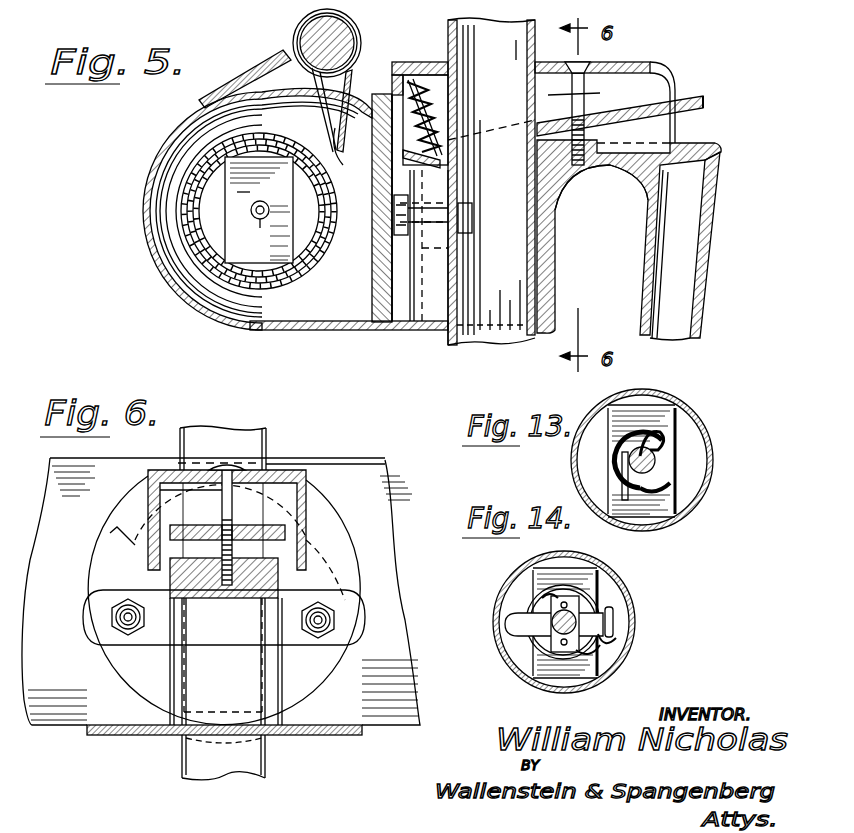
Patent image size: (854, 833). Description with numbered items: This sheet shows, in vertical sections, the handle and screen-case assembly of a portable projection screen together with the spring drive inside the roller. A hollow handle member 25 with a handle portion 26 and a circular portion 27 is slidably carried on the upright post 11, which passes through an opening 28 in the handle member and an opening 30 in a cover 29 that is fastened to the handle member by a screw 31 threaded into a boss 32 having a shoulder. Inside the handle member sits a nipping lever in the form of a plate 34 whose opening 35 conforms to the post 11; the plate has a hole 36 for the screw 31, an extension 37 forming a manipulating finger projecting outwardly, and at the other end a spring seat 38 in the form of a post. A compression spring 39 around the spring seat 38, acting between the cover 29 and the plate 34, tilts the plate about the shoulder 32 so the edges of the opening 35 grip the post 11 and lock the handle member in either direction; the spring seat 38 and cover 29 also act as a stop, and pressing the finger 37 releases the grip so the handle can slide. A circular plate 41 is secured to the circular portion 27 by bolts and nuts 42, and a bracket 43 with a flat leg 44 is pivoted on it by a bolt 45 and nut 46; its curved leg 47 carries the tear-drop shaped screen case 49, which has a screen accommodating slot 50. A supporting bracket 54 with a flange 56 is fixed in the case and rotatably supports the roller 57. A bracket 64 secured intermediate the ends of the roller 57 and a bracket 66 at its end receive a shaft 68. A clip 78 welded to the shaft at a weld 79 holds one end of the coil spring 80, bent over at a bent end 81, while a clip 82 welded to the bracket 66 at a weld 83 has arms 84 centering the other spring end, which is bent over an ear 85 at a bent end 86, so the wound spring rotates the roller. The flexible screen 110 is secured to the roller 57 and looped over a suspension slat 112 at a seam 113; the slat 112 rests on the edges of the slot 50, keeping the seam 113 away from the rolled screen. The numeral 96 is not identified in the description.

In FIG. 5, the upright tube or post 11 is at (535, 24).
In FIG. 6, the upright tube or post 11 is at (268, 442).
In FIG. 5, the hollow handle member 25 is at (560, 210).
In FIG. 5, the handle portion 26 is at (690, 226).
In FIG. 5, the circular portion 27 is at (422, 330).
In FIG. 6, the circular portion 27 is at (122, 563).
In FIG. 5, the opening 28 is at (458, 324).
In FIG. 6, the opening 28 is at (262, 712).
In FIG. 5, the cover 29 is at (648, 62).
In FIG. 6, the cover 29 is at (282, 500).
In FIG. 5, the opening 30 is at (440, 68).
In FIG. 5, the screw 31 is at (580, 93).
In FIG. 6, the screw 31 is at (223, 489).
In FIG. 5, the boss having a shoulder 32 is at (600, 140).
In FIG. 6, the boss having a shoulder 32 is at (310, 550).
In FIG. 5, the nipping lever plate 34 is at (645, 106).
In FIG. 6, the nipping lever plate 34 is at (278, 530).
In FIG. 5, the opening 35 is at (550, 138).
In FIG. 5, the hole 36 is at (572, 128).
In FIG. 6, the hole 36 is at (235, 522).
In FIG. 5, the extension 37 is at (708, 104).
In FIG. 5, the spring seat 38 is at (440, 112).
In FIG. 5, the compression spring 39 is at (442, 90).
In FIG. 5, the circular plate 41 is at (400, 306).
In FIG. 5, the bolts and nuts 42 is at (475, 212).
In FIG. 6, the bolts and nuts 42 is at (113, 614).
In FIG. 5, the bracket 43 is at (323, 328).
In FIG. 6, the bracket 43 is at (353, 690).
In FIG. 5, the flat leg 44 is at (375, 273).
In FIG. 6, the flat leg 44 is at (97, 688).
In FIG. 5, the bolt 45 is at (360, 222).
In FIG. 5, the nut 46 is at (440, 175).
In FIG. 5, the curved leg 47 is at (160, 186).
In FIG. 5, the screen case 49 is at (168, 212).
In FIG. 6, the screen case 49 is at (383, 532).
In FIG. 5, the screen accommodating slot 50 is at (268, 42).
In FIG. 5, the supporting bracket 54 is at (193, 268).
In FIG. 5, the flange 56 is at (158, 252).
In FIG. 5, the roller 57 is at (322, 190).
In FIG. 13, the roller 57 is at (712, 444).
In FIG. 14, the roller 57 is at (630, 612).
In FIG. 13, the bracket 64 is at (665, 402).
In FIG. 14, the bracket 66 is at (577, 574).
In FIG. 13, the shaft 68 is at (656, 460).
In FIG. 13, the clip 78 is at (664, 474).
In FIG. 13, the welding 79 is at (640, 460).
In FIG. 13, the coil spring 80 is at (662, 490).
In FIG. 13, the bent over end 81 is at (660, 430).
In FIG. 14, the clip 82 is at (590, 600).
In FIG. 14, the welding 83 is at (563, 600).
In FIG. 14, the arms 84 is at (540, 600).
In FIG. 14, the ear 85 is at (615, 623).
In FIG. 14, the bent over end 86 is at (612, 638).
In FIG. 5, the hub line 96 is at (240, 192).
In FIG. 5, the flexible screen 110 is at (342, 152).
In FIG. 5, the suspension slat 112 is at (340, 36).
In FIG. 5, the seam 113 is at (362, 66).